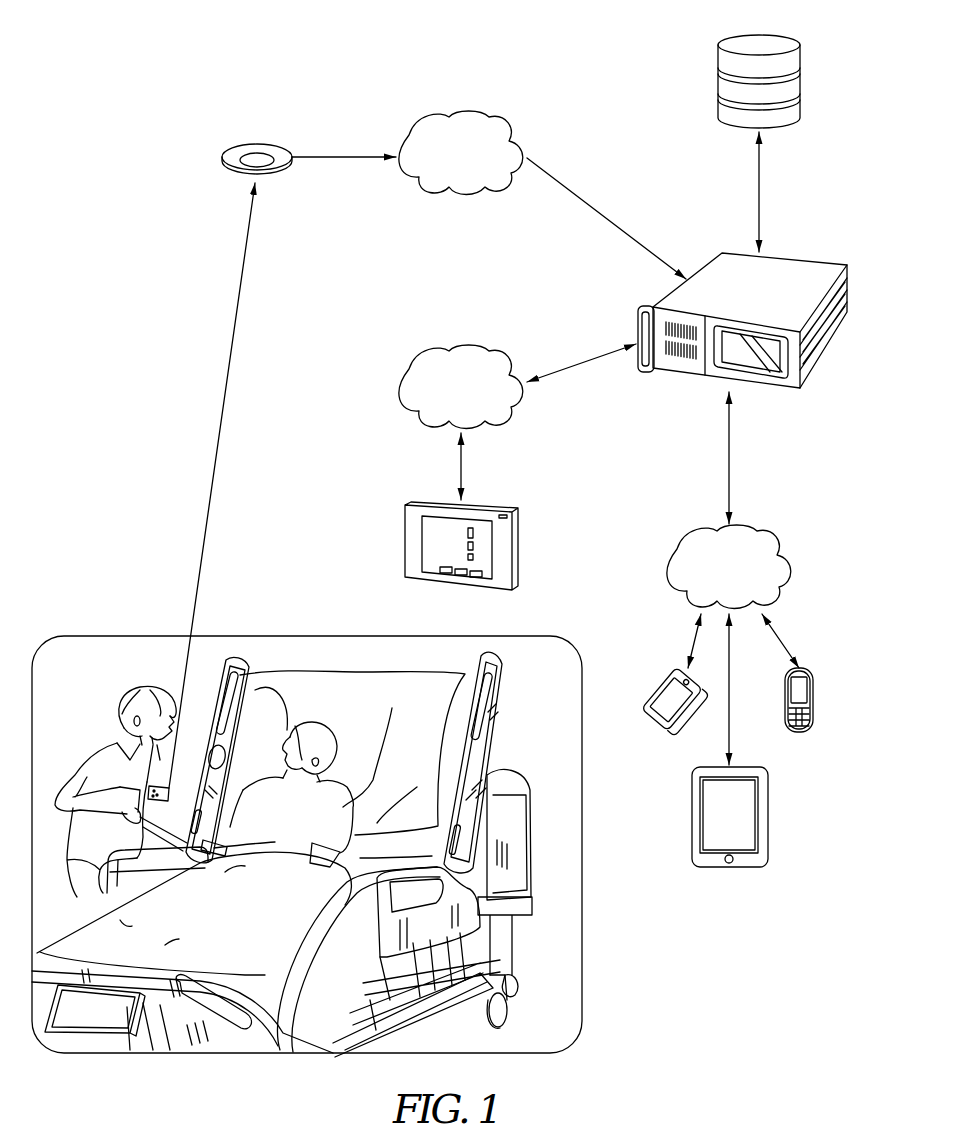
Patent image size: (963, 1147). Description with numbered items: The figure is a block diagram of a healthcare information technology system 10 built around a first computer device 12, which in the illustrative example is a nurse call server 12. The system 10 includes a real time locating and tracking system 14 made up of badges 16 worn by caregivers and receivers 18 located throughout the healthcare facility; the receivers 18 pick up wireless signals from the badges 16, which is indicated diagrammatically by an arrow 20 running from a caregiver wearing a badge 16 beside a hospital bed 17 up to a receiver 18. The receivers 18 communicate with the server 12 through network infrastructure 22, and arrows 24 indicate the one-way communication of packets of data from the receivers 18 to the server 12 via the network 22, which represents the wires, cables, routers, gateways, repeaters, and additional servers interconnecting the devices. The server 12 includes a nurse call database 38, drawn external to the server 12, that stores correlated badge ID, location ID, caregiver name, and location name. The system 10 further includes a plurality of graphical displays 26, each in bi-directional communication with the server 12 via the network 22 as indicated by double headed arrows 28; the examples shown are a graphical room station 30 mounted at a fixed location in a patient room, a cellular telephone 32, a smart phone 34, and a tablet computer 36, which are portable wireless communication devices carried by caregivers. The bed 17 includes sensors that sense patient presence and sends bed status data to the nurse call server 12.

The healthcare information technology system 10 is at (150, 120).
The first computer device 12 is at (797, 262).
The real time locating and tracking system 14 is at (218, 200).
The badge 16 is at (117, 778).
The hospital bed 17 is at (508, 765).
The receiver 18 is at (248, 152).
The arrow 20 is at (210, 447).
The network infrastructure 22 is at (462, 112).
The arrow 24 is at (341, 152).
The graphical display 26 is at (390, 523).
The double headed arrow 28 is at (580, 366).
The graphical room station 30 is at (412, 552).
The cellular telephone 32 is at (805, 690).
The smart phone 34 is at (672, 690).
The tablet computer 36 is at (748, 826).
The nurse call database 38 is at (796, 86).